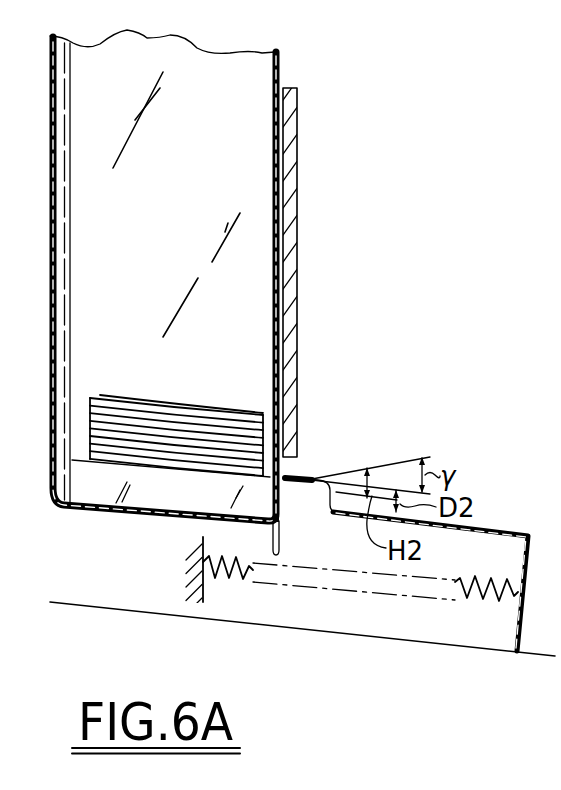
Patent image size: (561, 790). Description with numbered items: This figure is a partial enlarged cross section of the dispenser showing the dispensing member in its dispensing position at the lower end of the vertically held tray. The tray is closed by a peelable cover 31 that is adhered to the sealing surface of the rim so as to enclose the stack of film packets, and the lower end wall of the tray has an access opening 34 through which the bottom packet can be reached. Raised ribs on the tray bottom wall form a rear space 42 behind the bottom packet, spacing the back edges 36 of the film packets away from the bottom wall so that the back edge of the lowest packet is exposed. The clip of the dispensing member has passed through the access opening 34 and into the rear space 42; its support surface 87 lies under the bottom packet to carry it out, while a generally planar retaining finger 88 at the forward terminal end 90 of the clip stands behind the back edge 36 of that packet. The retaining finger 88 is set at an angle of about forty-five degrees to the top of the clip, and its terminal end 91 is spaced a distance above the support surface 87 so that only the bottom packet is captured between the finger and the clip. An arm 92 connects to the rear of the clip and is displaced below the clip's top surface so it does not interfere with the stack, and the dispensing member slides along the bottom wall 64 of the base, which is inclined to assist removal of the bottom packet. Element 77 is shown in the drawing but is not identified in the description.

The peelable cover 31 is at (270, 238).
The sealing strip 77 is at (297, 262).
The back edges of the film packets 36 is at (92, 402).
The access opening 34 is at (193, 510).
The rear space 42 is at (63, 497).
The retaining finger 88 is at (298, 472).
The terminal end of the retaining finger 91 is at (312, 472).
The support surface 87 is at (326, 475).
The forward terminal end of the clip 90 is at (288, 488).
The arm 92 is at (484, 525).
The bottom wall of the base 64 is at (477, 646).